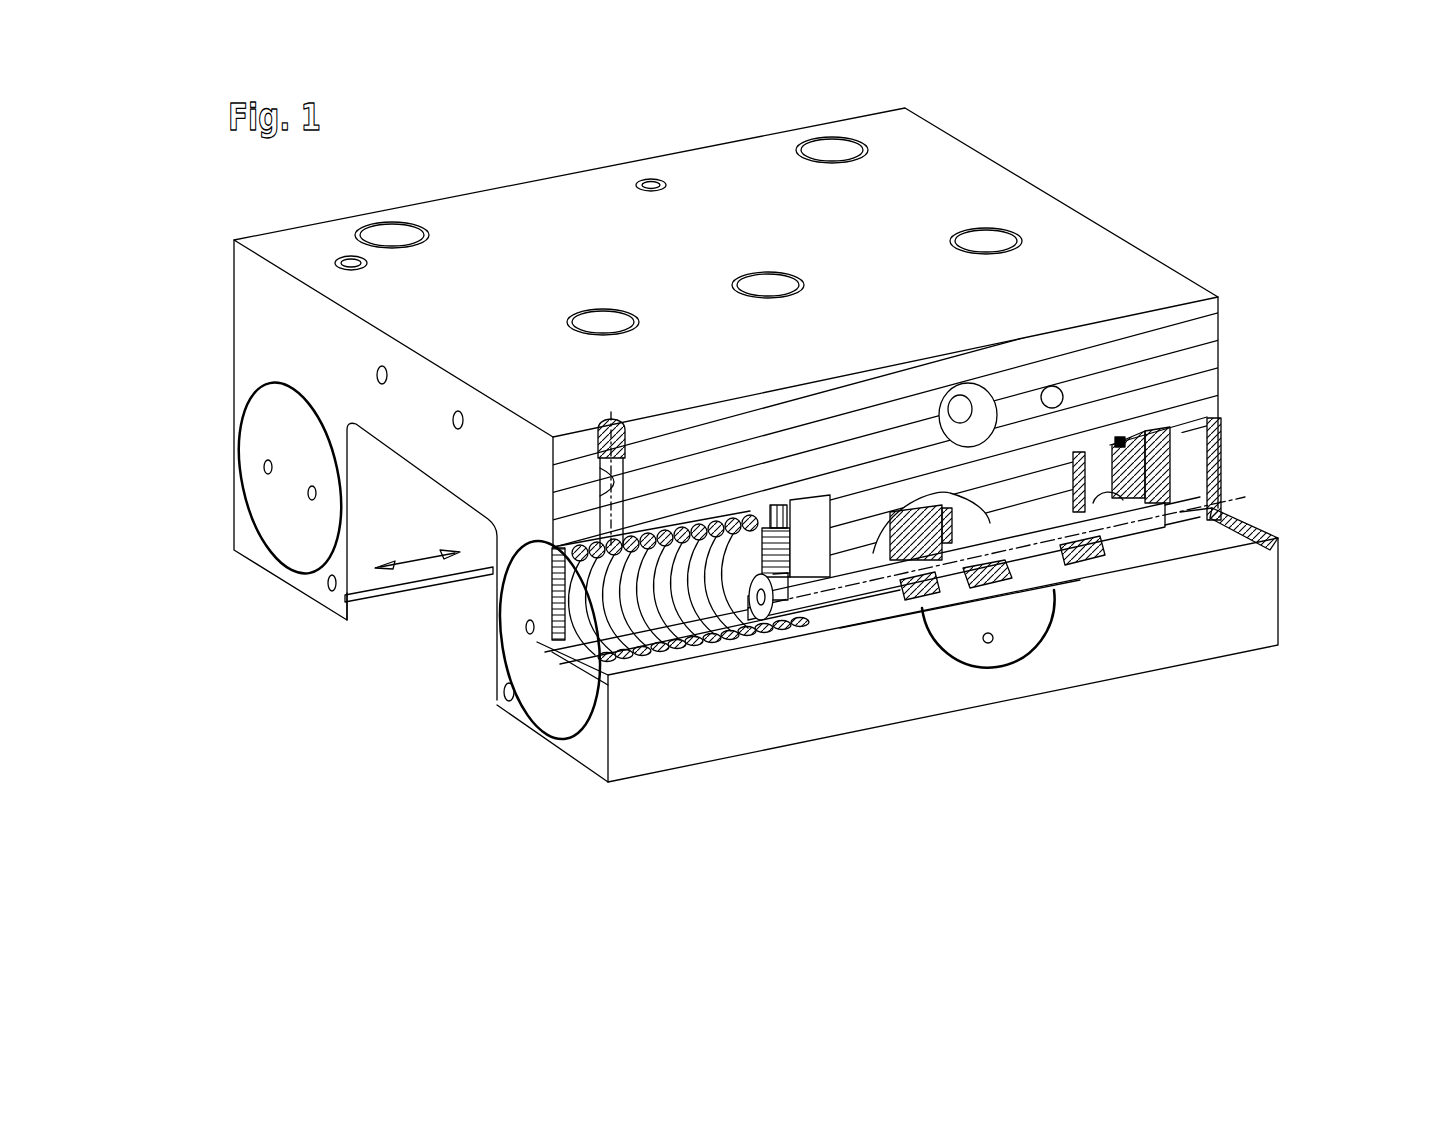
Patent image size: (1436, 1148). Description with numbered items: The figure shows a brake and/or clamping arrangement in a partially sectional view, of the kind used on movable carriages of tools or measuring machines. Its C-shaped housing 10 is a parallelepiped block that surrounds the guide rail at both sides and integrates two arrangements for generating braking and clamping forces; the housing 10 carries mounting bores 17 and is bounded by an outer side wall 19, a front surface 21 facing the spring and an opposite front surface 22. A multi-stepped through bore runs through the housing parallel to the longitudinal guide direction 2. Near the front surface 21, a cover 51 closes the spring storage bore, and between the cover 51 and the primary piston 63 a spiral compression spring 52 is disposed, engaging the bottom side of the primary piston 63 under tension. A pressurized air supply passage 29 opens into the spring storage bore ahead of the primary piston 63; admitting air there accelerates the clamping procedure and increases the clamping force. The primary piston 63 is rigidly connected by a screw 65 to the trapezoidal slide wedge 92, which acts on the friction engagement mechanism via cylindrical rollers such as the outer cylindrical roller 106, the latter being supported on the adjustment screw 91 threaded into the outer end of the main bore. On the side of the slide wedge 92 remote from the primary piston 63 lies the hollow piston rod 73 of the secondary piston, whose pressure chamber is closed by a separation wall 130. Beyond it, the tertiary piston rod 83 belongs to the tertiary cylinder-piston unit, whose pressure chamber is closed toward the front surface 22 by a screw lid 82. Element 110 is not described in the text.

The guide direction 2 is at (420, 564).
The housing 10 is at (238, 555).
The mounting bores 17 is at (1003, 240).
The outer side wall 19 is at (1193, 637).
The front surface facing spring 21 is at (319, 587).
The front surface 22 is at (1220, 349).
The pressurized air supply passage 29 is at (608, 513).
The cover 51 is at (550, 700).
The spring element 52 is at (670, 623).
The primary piston 63 is at (742, 565).
The screw 65 is at (832, 577).
The hollow piston rod 73 is at (1083, 552).
The screw lid 82 is at (1242, 512).
The tertiary piston rod 83 is at (1157, 480).
The adjustment screw 91 is at (995, 655).
The slide wedge 92 is at (907, 535).
The outer cylindrical roller 106 is at (947, 580).
The cam 110 is at (911, 588).
The separation wall 130 is at (1130, 467).